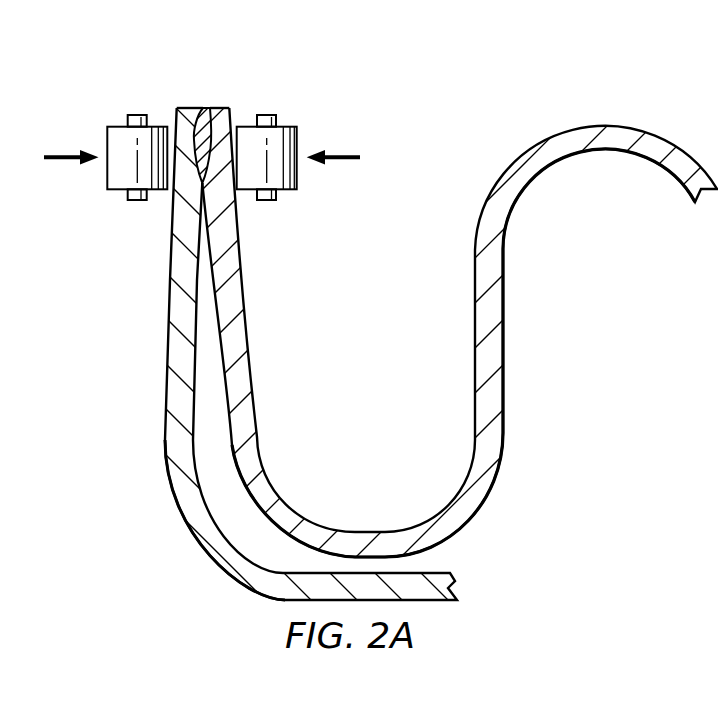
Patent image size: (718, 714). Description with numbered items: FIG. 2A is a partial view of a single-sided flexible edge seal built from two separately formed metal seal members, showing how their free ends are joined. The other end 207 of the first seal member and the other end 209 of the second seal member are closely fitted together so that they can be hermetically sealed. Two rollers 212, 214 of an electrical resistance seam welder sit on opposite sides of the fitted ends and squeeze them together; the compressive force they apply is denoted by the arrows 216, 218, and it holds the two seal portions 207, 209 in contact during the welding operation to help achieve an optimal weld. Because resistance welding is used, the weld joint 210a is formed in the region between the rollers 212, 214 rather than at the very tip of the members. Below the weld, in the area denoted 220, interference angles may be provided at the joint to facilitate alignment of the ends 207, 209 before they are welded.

The other end of first seal member 207 is at (251, 240).
The other end of second seal member 209 is at (157, 240).
The weld joint 210a is at (210, 125).
The roller 212 is at (120, 126).
The roller 214 is at (287, 126).
The arrow denoting compressive force 216 is at (63, 154).
The arrow denoting compressive force 218 is at (343, 154).
The area of interference angles 220 is at (208, 413).